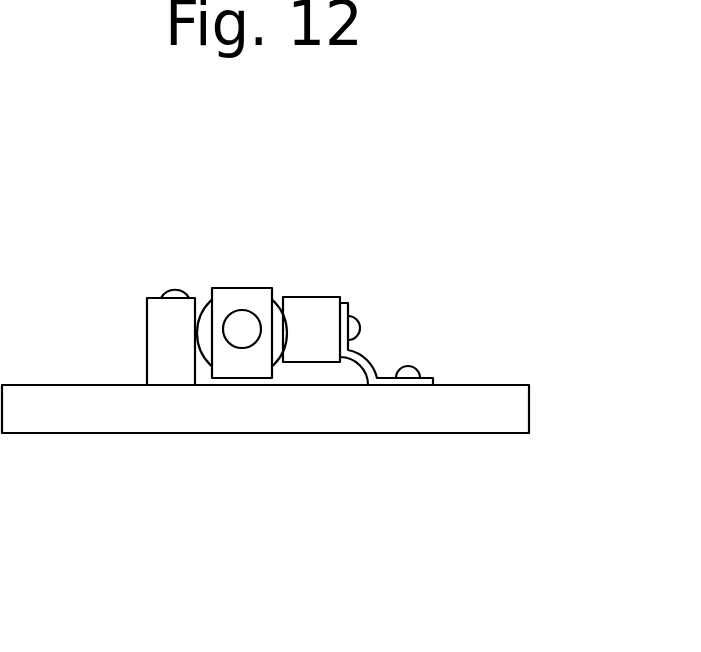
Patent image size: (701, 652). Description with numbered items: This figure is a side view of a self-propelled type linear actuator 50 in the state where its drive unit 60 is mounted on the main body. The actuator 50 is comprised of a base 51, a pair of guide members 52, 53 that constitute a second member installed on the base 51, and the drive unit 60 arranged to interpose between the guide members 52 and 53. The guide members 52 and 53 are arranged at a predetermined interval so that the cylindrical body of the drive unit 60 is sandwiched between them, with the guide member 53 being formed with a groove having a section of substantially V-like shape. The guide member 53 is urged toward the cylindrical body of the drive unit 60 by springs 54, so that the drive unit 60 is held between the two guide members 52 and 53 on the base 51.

The actuator 50 is at (484, 306).
The base 51 is at (530, 410).
The guide member 52 is at (147, 323).
The guide member 53 is at (318, 297).
The springs 54 is at (372, 353).
The drive unit 60 is at (243, 288).